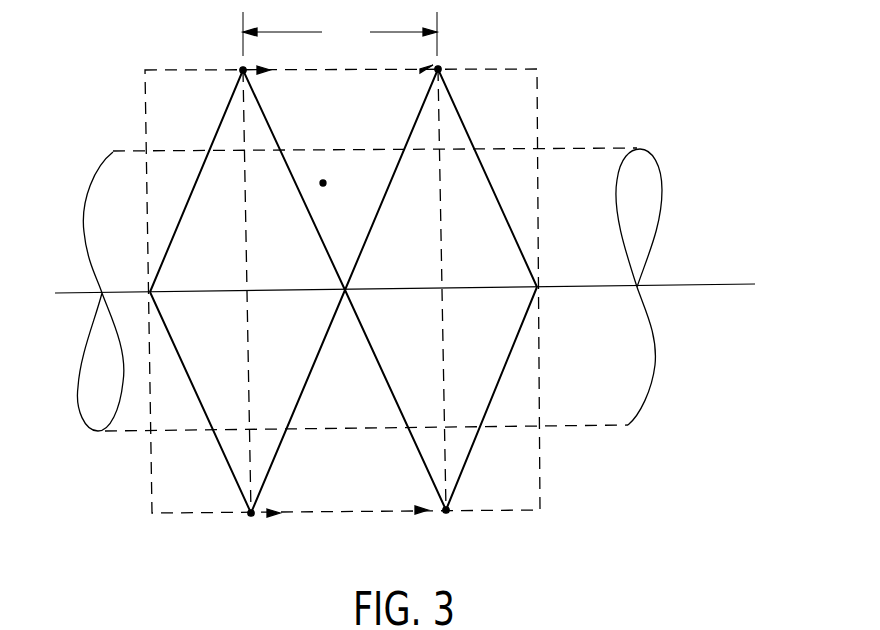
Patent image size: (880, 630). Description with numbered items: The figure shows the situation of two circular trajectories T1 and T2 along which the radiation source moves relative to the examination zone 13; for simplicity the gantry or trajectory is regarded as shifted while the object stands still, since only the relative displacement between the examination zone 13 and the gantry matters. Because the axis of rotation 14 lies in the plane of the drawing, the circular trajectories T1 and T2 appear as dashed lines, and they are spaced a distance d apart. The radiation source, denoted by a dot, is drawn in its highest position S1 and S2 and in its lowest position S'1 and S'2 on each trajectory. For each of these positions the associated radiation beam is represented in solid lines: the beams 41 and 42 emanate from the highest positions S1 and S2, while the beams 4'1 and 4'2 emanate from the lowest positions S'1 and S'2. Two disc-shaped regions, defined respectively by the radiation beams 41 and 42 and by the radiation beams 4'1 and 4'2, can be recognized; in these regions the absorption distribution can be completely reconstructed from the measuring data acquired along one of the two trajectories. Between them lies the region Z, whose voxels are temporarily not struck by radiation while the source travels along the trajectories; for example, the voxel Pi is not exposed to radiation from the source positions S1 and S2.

The highest radiation source position on first trajectory S1 is at (242, 68).
The highest radiation source position on second trajectory S2 is at (440, 66).
The lowest radiation source position on first trajectory S'1 is at (255, 540).
The lowest radiation source position on second trajectory S'2 is at (460, 538).
The distance between trajectories d is at (340, 32).
The radiation beam from position S1 41 is at (273, 135).
The radiation beam from position S2 42 is at (467, 129).
The radiation beam from position S'1 4'1 is at (247, 401).
The radiation beam from position S'2 4'2 is at (441, 398).
The examination zone 13 is at (575, 148).
The axis of rotation 14 is at (711, 286).
The first circular trajectory T1 is at (247, 266).
The second circular trajectory T2 is at (441, 266).
The voxel Pi is at (327, 183).
The intermediate region Z is at (368, 478).